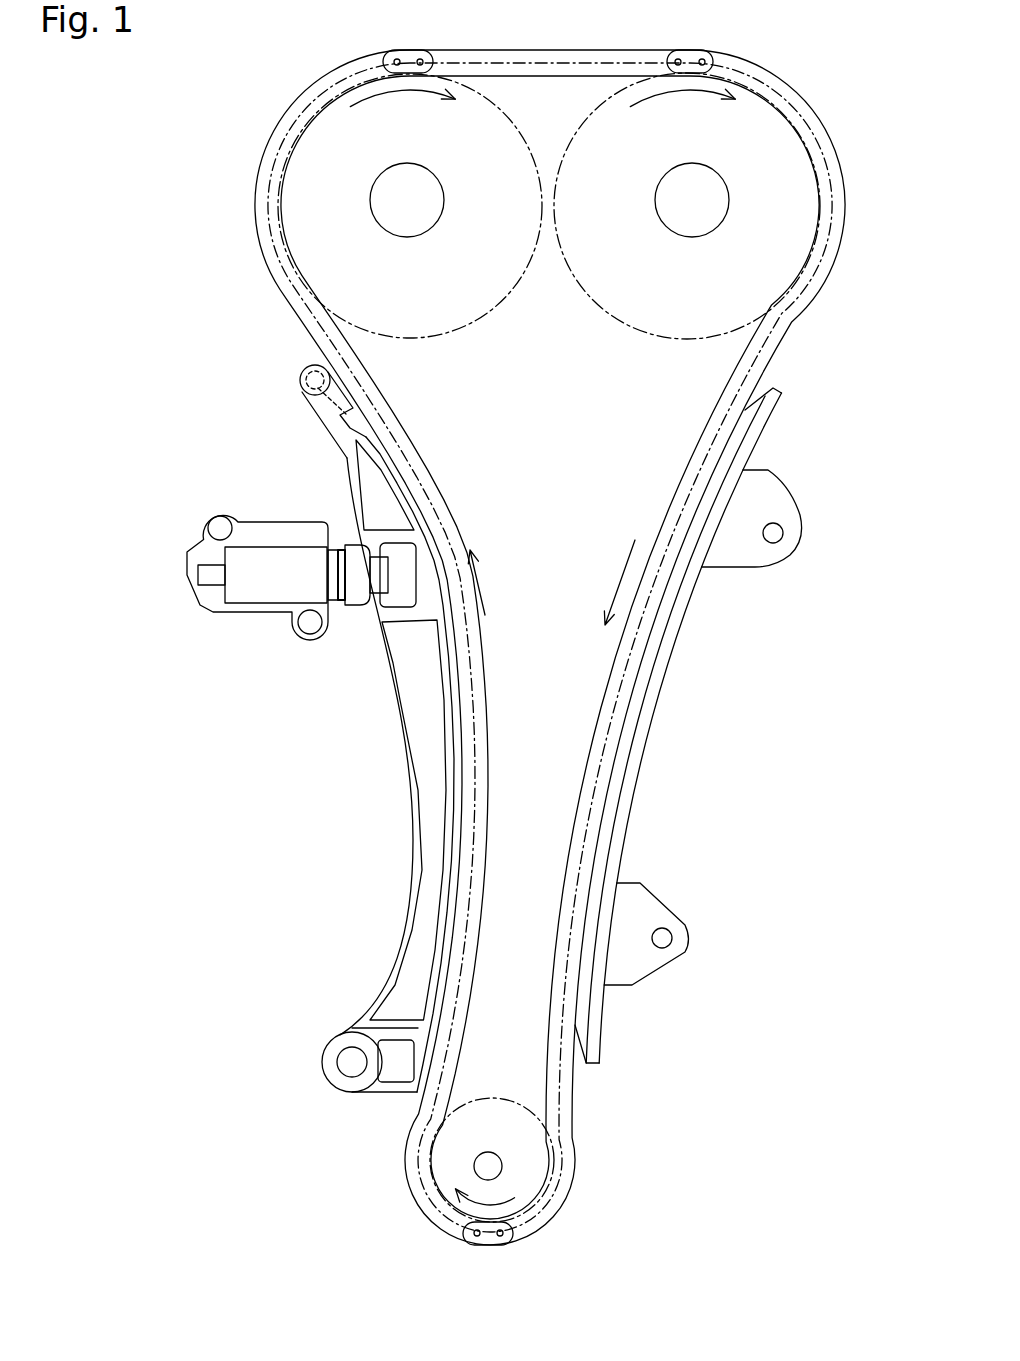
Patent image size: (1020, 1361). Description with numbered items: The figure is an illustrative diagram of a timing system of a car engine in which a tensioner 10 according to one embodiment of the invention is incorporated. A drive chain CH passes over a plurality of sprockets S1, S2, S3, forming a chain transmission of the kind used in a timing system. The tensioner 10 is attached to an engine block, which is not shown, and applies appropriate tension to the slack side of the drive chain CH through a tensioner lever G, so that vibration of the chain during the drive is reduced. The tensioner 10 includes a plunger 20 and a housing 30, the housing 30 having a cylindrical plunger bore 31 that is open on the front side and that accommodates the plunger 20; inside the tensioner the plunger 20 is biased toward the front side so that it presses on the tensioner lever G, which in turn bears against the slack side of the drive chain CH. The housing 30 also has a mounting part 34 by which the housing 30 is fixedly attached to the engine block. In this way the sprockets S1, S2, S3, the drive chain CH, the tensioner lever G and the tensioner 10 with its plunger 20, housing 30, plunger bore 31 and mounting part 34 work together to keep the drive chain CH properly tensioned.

The sprocket S1 is at (530, 1166).
The sprocket S2 is at (315, 190).
The sprocket S3 is at (765, 182).
The drive chain CH is at (775, 342).
The tensioner lever G is at (420, 940).
The tensioner 10 is at (281, 573).
The plunger 20 is at (342, 600).
The housing 30 is at (277, 537).
The plunger bore 31 is at (273, 593).
The mounting part 34 is at (217, 518).